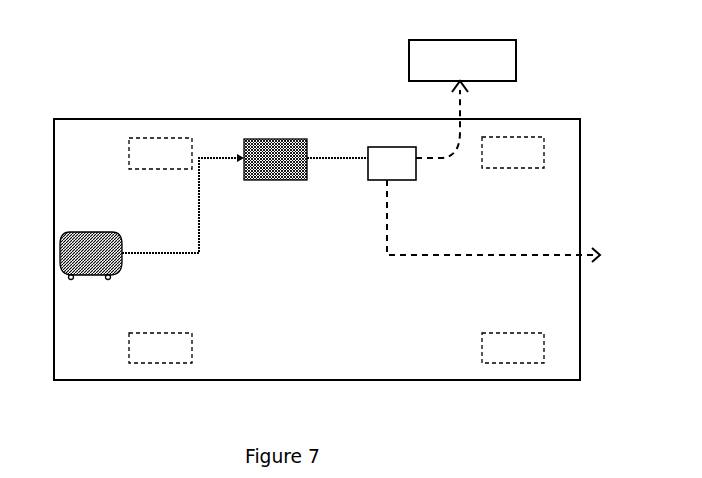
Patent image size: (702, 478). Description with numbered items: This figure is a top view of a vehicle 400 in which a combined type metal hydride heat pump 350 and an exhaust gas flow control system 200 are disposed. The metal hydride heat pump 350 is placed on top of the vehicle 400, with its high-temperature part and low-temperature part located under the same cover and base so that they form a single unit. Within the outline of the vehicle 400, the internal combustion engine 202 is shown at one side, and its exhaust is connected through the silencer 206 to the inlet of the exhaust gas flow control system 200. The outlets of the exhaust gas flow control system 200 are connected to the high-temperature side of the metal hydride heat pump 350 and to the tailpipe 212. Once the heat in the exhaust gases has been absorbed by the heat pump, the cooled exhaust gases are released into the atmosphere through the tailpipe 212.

The vehicle 400 is at (99, 109).
The internal combustion engine 202 is at (82, 290).
The silencer 206 is at (250, 128).
The exhaust gas flow control system 200 is at (391, 141).
The combined type metal hydride heat pump 350 is at (397, 55).
The tailpipe 212 is at (456, 272).